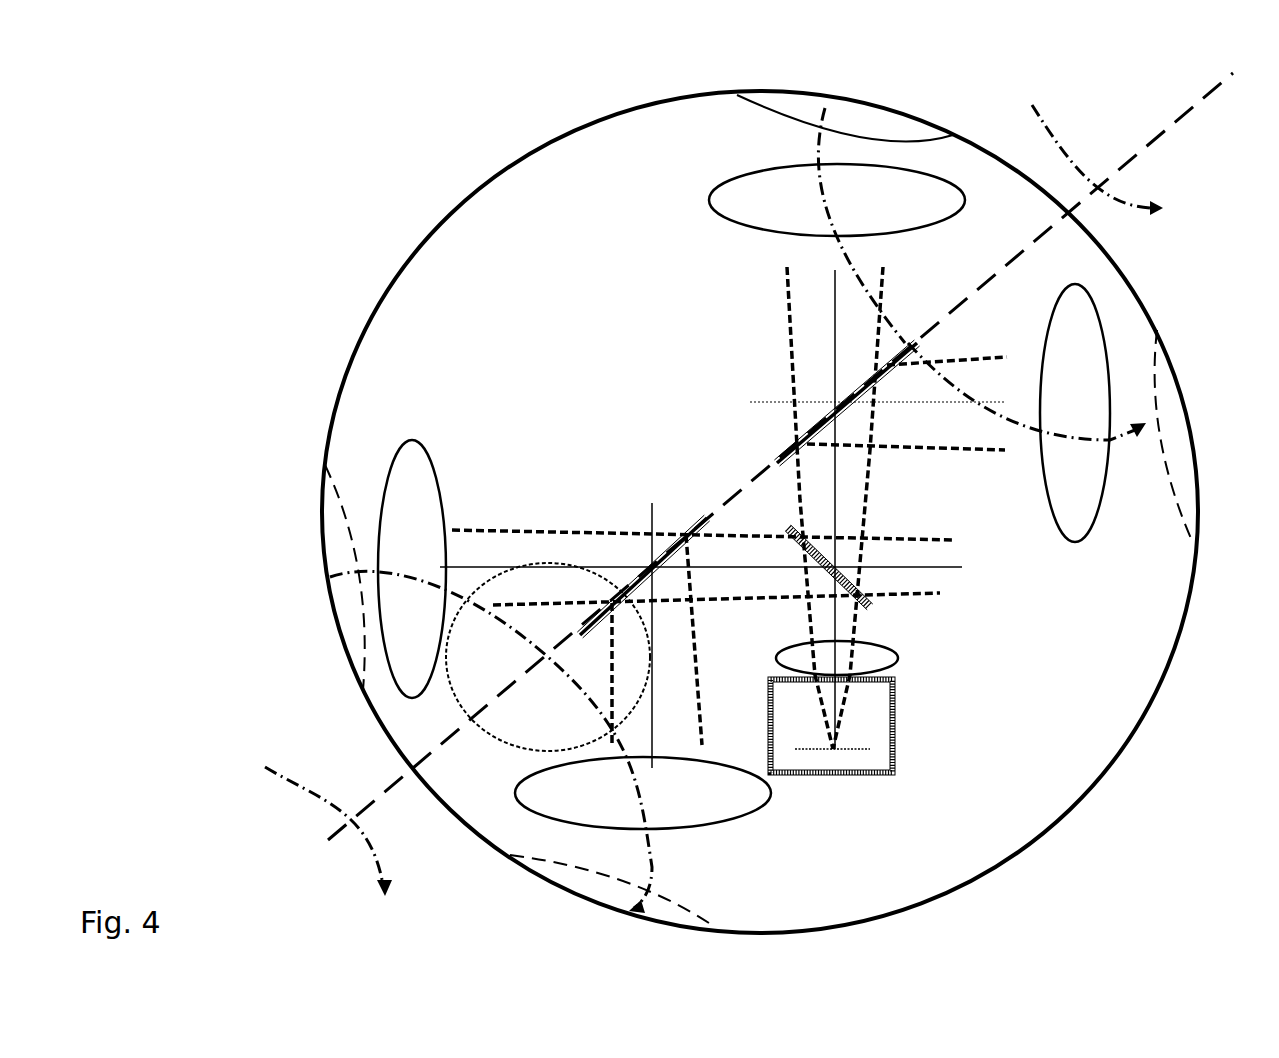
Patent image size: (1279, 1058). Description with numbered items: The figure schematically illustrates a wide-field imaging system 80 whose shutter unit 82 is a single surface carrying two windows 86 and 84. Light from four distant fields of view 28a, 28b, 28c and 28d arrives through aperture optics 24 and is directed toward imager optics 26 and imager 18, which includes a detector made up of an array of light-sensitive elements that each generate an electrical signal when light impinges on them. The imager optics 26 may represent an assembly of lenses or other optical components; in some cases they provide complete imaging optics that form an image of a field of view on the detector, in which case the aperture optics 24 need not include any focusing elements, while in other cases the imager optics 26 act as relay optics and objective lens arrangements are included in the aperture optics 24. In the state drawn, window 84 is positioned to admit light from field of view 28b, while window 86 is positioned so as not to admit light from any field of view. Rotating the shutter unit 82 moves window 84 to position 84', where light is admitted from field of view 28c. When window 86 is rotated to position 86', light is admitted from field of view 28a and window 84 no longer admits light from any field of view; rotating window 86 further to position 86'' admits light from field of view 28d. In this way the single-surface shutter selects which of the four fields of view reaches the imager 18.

The imager 18 is at (890, 725).
The aperture optics 24 is at (720, 192).
The imager optics 26 is at (885, 658).
The field of view 28a is at (543, 550).
The field of view 28b is at (822, 345).
The field of view 28c is at (907, 430).
The field of view 28d is at (677, 723).
The wide-field imaging system 80 is at (262, 242).
The shutter unit 82 is at (485, 182).
The window 84 is at (816, 87).
The window position 84' is at (1206, 436).
The window 86 is at (629, 548).
The window position 86' is at (288, 577).
The window position 86'' is at (572, 890).